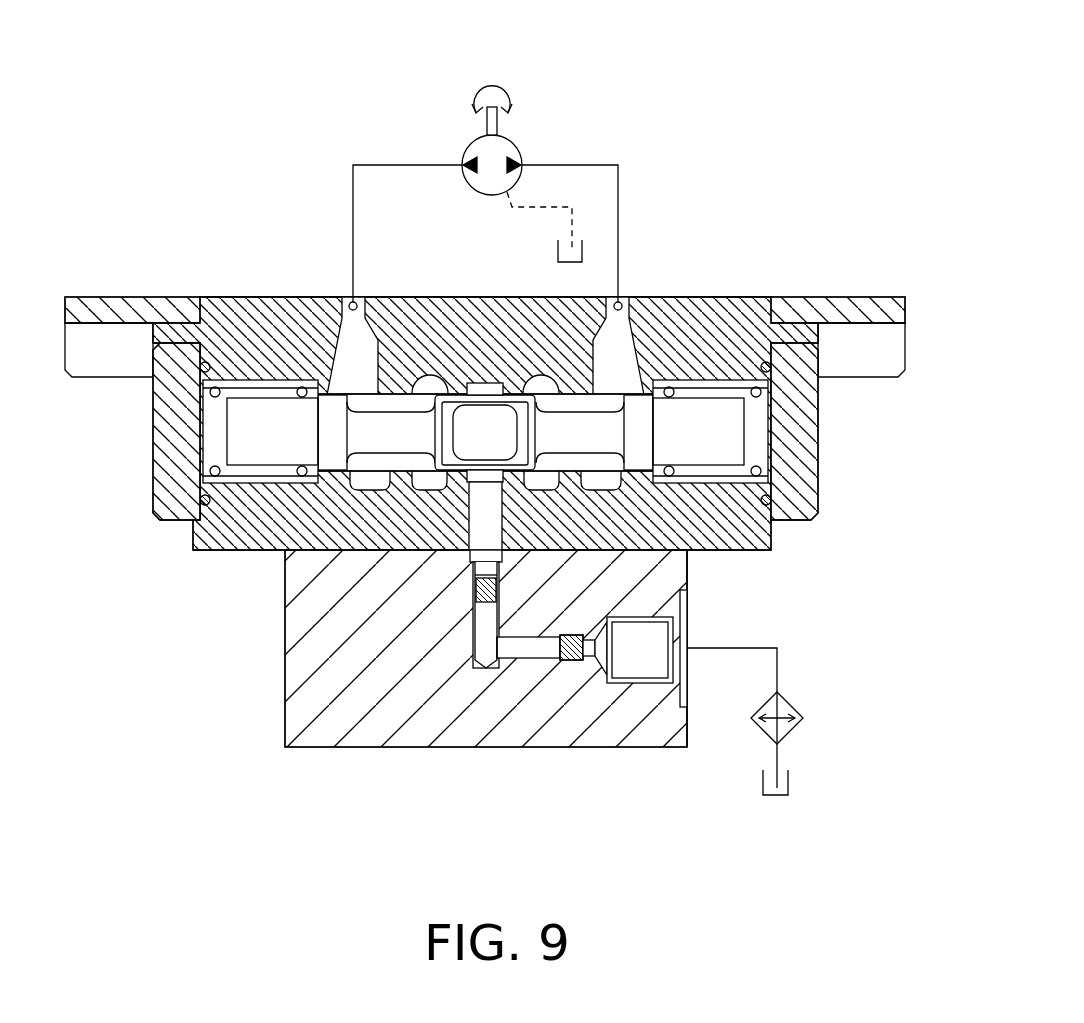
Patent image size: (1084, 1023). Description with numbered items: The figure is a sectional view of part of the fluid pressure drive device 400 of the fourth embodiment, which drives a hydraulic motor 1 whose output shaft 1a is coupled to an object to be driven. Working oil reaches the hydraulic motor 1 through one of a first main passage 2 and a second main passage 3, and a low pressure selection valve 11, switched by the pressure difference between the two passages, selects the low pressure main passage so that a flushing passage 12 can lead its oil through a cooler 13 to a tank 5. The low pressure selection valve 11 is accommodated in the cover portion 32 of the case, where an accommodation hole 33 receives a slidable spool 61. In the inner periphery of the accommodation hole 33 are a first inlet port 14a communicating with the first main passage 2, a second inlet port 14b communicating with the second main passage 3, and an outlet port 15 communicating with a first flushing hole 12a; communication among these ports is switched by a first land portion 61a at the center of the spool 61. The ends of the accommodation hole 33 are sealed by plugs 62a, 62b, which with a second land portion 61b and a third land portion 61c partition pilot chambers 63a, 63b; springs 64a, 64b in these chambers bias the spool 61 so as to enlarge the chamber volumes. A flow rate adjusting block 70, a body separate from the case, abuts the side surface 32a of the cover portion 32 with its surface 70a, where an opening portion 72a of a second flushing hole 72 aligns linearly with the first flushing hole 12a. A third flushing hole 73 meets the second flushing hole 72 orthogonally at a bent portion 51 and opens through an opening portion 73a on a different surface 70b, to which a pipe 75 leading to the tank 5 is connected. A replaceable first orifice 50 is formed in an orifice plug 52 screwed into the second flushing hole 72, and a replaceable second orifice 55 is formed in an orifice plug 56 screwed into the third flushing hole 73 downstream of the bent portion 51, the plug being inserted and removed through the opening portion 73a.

The fluid pressure drive device 400 is at (707, 113).
The hydraulic motor 1 is at (468, 147).
The output shaft 1a is at (499, 126).
The first main passage 2 is at (352, 172).
The second main passage 3 is at (619, 176).
The tank 5 is at (585, 248).
The low pressure selection valve 11 is at (670, 360).
The flushing passage 12 is at (465, 652).
The first flushing hole 12a is at (467, 558).
The cooler 13 is at (790, 704).
The first inlet port 14a is at (437, 365).
The second inlet port 14b is at (548, 360).
The outlet port 15 is at (483, 476).
The cover portion 32 is at (770, 297).
The side surface 32a is at (773, 547).
The accommodation hole 33 is at (290, 385).
The first orifice 50 is at (612, 612).
The bent portion 51 is at (499, 668).
The orifice plug 52 is at (498, 586).
The second orifice 55 is at (566, 655).
The orifice plug 56 is at (586, 656).
The spool 61 is at (385, 425).
The first land portion 61a is at (450, 392).
The second land portion 61b is at (336, 418).
The third land portion 61c is at (640, 420).
The plug 62a is at (158, 345).
The plug 62b is at (806, 345).
The pilot chamber 63a is at (229, 385).
The pilot chamber 63b is at (745, 385).
The spring 64a is at (205, 470).
The spring 64b is at (766, 472).
The flow rate adjusting block 70 is at (336, 708).
The surface 70a is at (268, 553).
The surface 70b is at (690, 742).
The second flushing hole 72 is at (483, 620).
The opening portion 72a is at (500, 556).
The third flushing hole 73 is at (528, 650).
The opening portion 73a is at (688, 657).
The pipe 75 is at (778, 666).